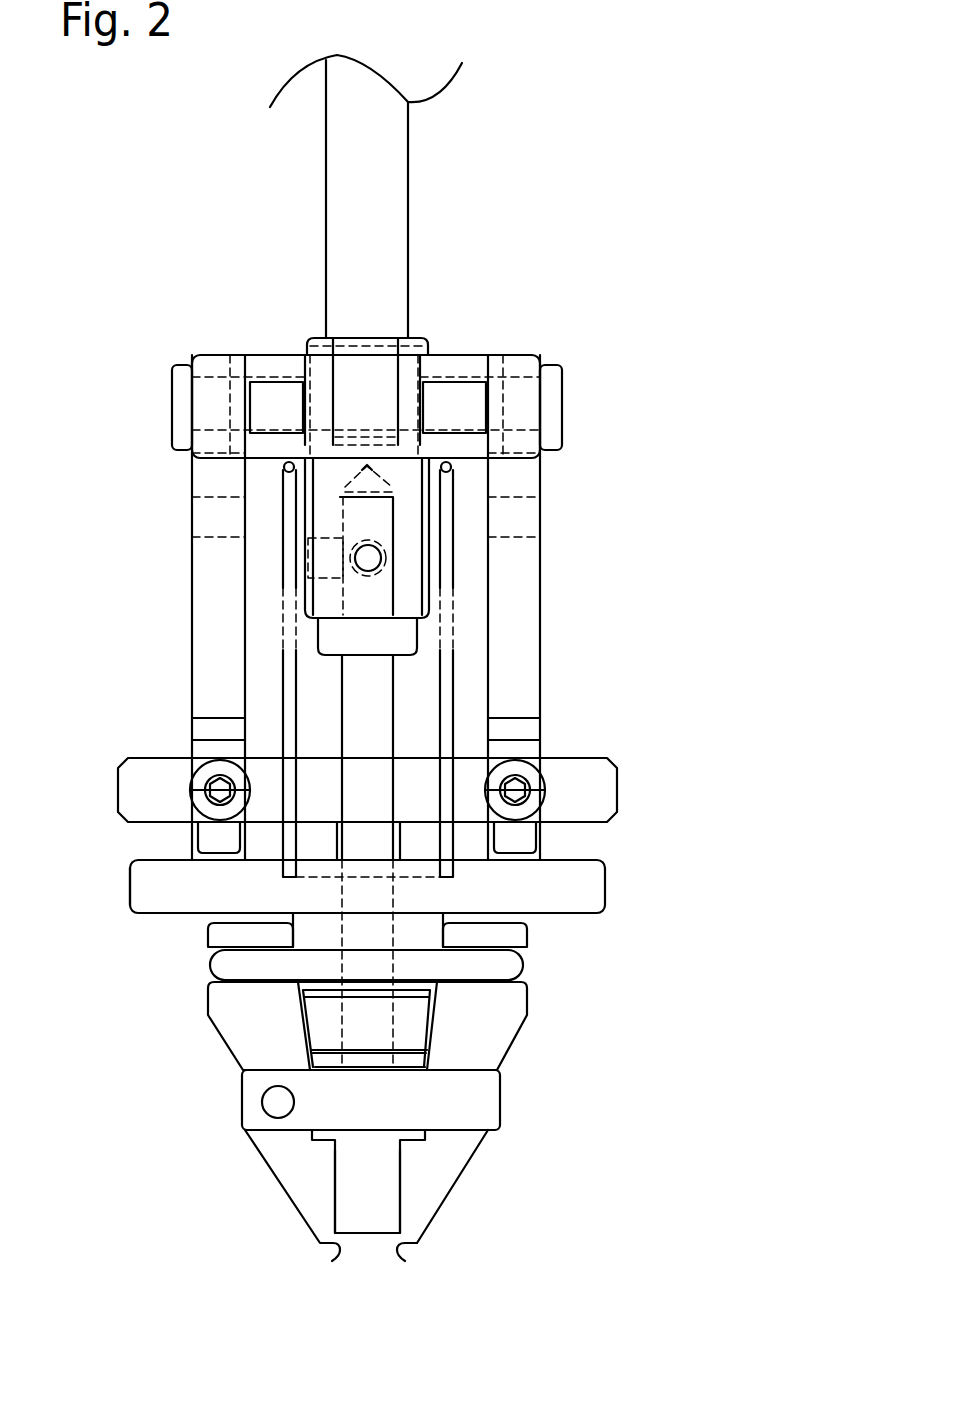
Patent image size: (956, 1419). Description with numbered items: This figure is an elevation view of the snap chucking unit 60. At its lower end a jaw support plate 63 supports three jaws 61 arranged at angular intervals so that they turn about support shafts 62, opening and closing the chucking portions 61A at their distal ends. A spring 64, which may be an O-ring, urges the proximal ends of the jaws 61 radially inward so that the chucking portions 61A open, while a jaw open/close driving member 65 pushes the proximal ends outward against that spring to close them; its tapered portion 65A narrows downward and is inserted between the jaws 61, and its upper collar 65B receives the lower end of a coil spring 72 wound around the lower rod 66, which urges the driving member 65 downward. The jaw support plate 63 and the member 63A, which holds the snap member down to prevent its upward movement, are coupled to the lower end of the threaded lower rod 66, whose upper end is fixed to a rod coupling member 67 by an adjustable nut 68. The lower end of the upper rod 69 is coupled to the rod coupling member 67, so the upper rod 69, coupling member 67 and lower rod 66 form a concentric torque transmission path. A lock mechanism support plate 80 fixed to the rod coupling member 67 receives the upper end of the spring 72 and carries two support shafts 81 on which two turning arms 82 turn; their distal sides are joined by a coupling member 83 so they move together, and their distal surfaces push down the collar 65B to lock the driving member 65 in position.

The snap chucking unit 60 is at (572, 302).
The jaws 61 is at (497, 1030).
The chucking portions 61A is at (330, 1259).
The support shafts 62 is at (262, 1096).
The jaw support plate 63 is at (500, 1097).
The snap holding member 63A is at (353, 1198).
The spring 64 is at (523, 962).
The jaw open/close driving member 65 is at (608, 873).
The tapered portion 65A is at (323, 1028).
The upper collar 65B is at (128, 882).
The lower rod 66 is at (393, 683).
The rod coupling member 67 is at (433, 572).
The nut 68 is at (420, 637).
The upper rod 69 is at (408, 178).
The spring 72 is at (453, 515).
The lock mechanism support plate 80 is at (463, 350).
The support shafts 81 is at (172, 377).
The turning arms 82 is at (192, 711).
The coupling member 83 is at (617, 780).